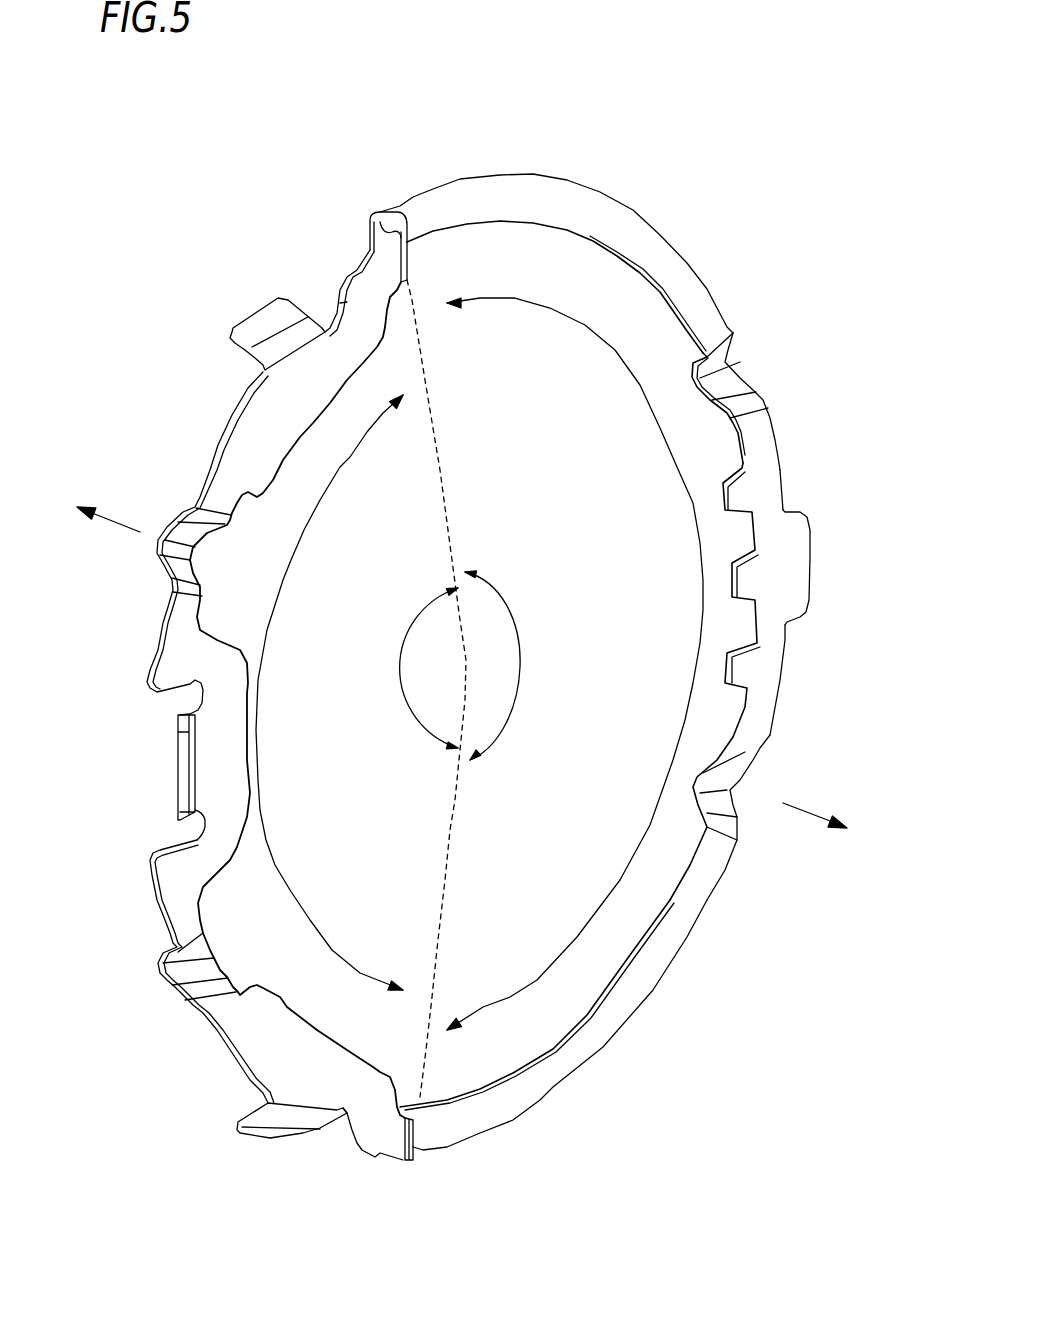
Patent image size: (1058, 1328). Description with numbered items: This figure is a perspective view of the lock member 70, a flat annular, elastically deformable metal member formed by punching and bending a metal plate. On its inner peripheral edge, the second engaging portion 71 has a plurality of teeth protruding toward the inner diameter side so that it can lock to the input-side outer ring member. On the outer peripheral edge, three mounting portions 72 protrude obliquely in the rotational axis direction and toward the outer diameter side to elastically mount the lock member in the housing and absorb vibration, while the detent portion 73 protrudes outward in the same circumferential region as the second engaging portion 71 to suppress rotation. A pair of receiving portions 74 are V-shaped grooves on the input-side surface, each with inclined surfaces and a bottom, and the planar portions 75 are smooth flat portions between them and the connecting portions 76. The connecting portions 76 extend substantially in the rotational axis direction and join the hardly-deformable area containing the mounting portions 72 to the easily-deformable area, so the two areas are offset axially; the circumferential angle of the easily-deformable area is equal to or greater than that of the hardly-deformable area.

The lock member 70 is at (655, 154).
The second engaging portion 71 is at (732, 582).
The mounting portions 72 is at (257, 308).
The detent portion 73 is at (812, 556).
The receiving portions 74 is at (730, 360).
The planar portions 75 is at (680, 262).
The connecting portions 76 is at (397, 218).